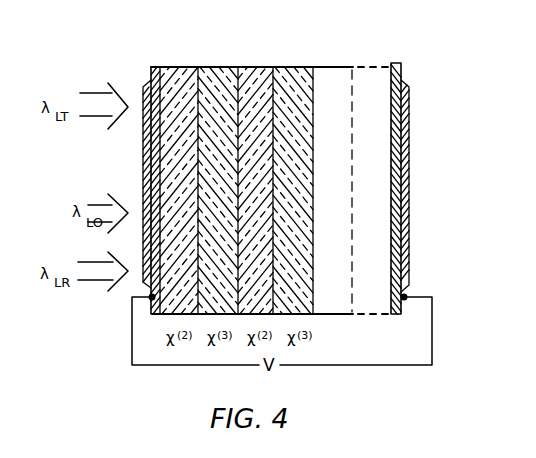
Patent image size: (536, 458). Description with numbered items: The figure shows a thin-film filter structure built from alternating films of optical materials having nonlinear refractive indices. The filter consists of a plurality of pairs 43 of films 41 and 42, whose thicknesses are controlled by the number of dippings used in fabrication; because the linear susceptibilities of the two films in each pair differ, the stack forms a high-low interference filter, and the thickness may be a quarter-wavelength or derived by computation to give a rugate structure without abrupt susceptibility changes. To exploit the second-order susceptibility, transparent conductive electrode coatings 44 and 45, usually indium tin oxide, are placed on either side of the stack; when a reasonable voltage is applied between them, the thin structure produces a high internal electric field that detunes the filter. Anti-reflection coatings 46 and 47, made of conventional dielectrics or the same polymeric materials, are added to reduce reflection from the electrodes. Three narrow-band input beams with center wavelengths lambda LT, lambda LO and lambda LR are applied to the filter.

The film 41 is at (170, 67).
The film 42 is at (213, 67).
The pair of films 43 is at (309, 61).
The conductive electrode coating 44 is at (145, 80).
The conductive electrode coating 45 is at (410, 160).
The anti-reflection coating 46 is at (143, 150).
The anti-reflection coating 47 is at (410, 107).